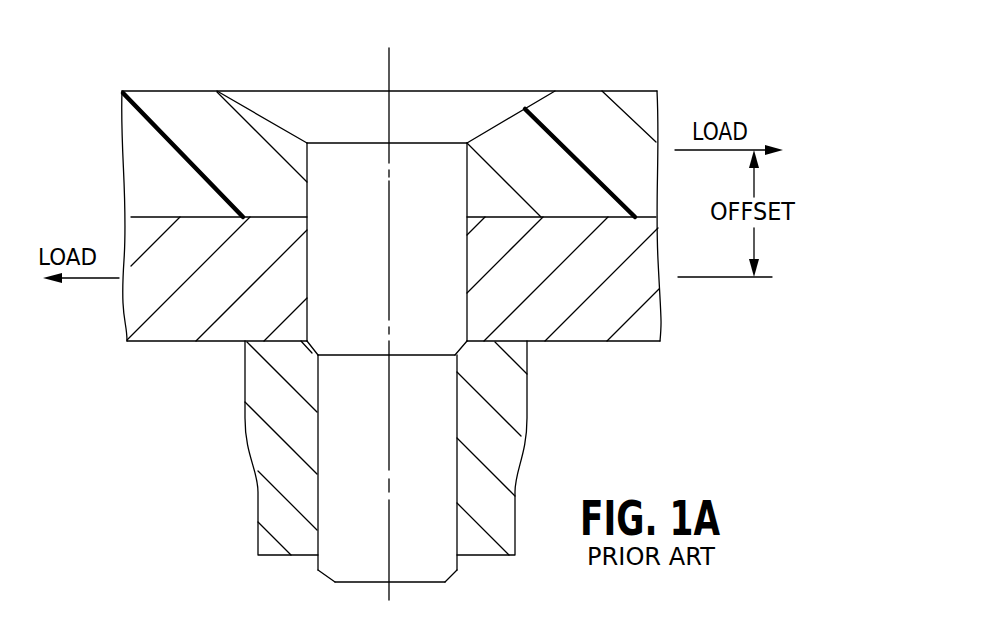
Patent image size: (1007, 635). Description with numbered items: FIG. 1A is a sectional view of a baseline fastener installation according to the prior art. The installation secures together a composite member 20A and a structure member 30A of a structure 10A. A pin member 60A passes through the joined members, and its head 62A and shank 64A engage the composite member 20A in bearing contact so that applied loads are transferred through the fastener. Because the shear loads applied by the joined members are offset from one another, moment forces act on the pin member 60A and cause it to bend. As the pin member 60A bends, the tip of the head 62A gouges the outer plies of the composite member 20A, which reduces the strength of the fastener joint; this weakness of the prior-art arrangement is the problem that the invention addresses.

The structure 10A is at (224, 42).
The composite member 20A is at (182, 91).
The structure member 30A is at (213, 343).
The pin member 60A is at (315, 91).
The head 62A is at (315, 91).
The shank 64A is at (308, 200).